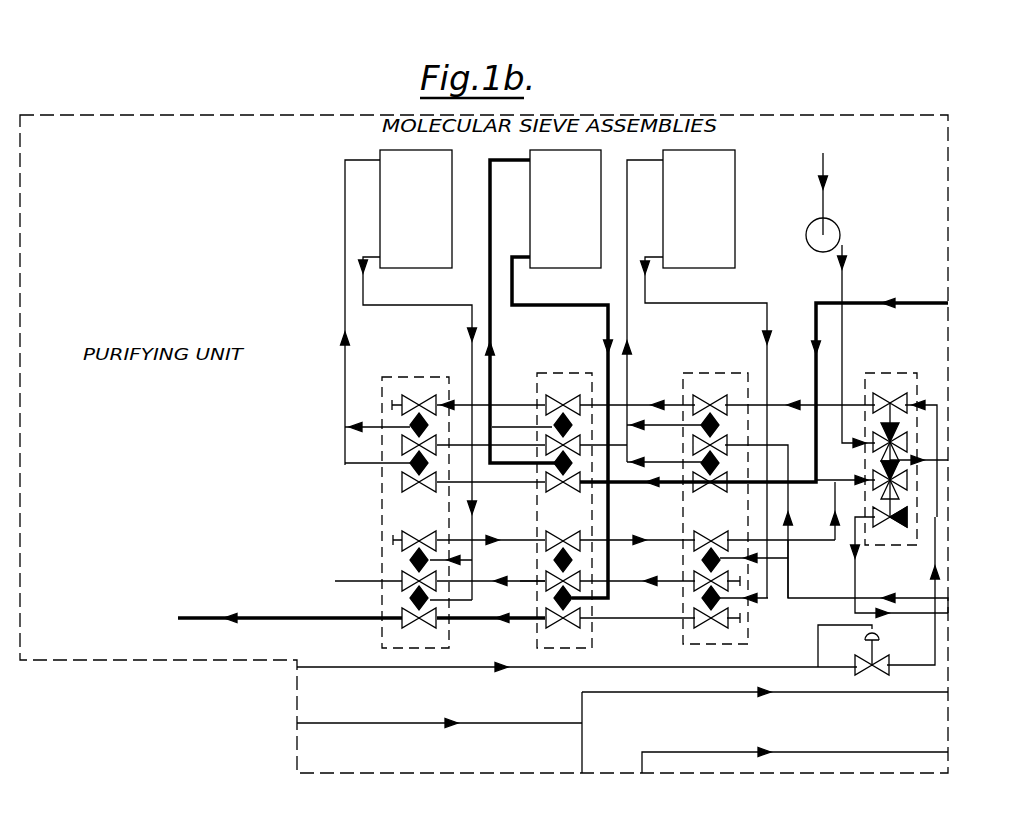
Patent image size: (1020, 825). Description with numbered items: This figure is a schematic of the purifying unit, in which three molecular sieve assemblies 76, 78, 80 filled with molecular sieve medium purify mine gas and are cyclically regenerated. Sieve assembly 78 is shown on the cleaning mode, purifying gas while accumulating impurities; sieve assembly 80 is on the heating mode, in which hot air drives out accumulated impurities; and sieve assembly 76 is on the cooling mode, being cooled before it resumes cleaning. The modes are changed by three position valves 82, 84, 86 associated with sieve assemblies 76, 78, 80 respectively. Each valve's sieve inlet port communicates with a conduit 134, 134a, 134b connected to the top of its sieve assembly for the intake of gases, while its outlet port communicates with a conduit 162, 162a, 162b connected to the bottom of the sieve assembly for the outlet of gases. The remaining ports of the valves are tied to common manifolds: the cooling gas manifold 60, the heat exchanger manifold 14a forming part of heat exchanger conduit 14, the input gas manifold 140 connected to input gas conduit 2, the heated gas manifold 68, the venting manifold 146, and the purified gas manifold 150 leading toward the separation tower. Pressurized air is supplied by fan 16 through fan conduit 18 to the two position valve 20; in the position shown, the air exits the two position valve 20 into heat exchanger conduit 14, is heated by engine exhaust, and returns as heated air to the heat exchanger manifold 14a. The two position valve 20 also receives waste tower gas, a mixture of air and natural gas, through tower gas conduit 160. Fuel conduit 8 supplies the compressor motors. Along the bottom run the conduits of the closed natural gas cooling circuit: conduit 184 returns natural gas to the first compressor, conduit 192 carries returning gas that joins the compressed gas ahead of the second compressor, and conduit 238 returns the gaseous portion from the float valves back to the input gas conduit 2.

The input gas conduit 2 is at (912, 303).
The fuel conduit 8 is at (848, 565).
The heat exchanger conduit 14 is at (917, 458).
The heat exchanger manifold 14a is at (757, 443).
The fan 16 is at (837, 225).
The fan conduit 18 is at (843, 332).
The two position valve 20 is at (895, 372).
The cooling gas manifold 60 is at (756, 362).
The heated gas manifold 68 is at (745, 535).
The molecular sieve assembly 76 is at (380, 150).
The molecular sieve assembly 78 is at (530, 217).
The molecular sieve assembly 80 is at (735, 150).
The three position valve 82 is at (408, 377).
The three position valve 84 is at (560, 373).
The three position valve 86 is at (702, 373).
The conduit 134 is at (345, 222).
The conduit 134a is at (516, 158).
The conduit 134b is at (660, 158).
The input gas manifold 140 is at (792, 480).
The venting manifold 146 is at (525, 578).
The purified gas manifold 150 is at (476, 622).
The tower gas conduit 160 is at (472, 668).
The conduit 162 is at (392, 305).
The conduit 162a is at (601, 310).
The conduit 162b is at (726, 303).
The conduit 184 is at (377, 725).
The conduit 192 is at (793, 752).
The conduit 238 is at (682, 694).